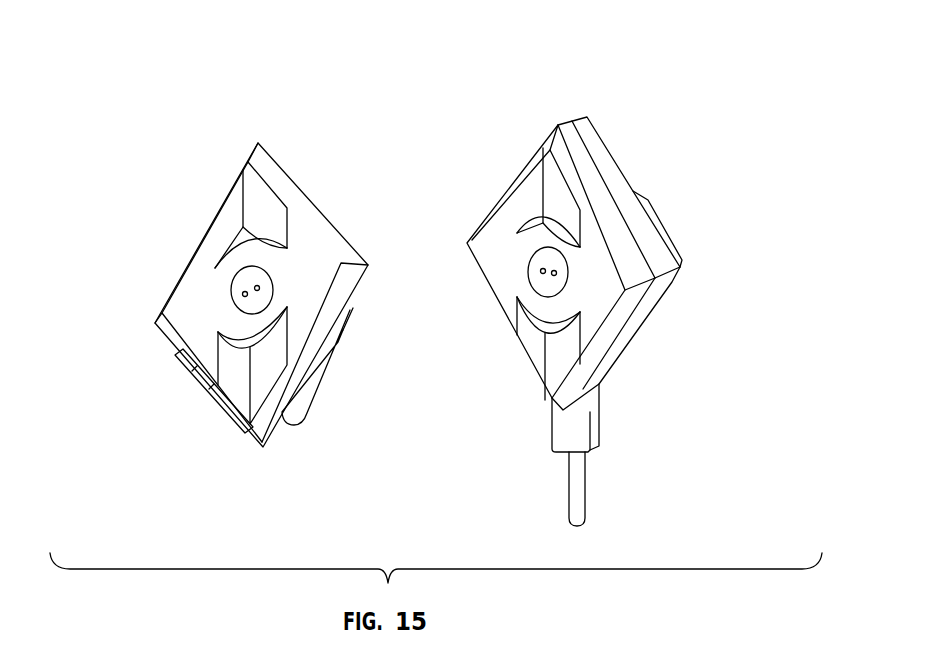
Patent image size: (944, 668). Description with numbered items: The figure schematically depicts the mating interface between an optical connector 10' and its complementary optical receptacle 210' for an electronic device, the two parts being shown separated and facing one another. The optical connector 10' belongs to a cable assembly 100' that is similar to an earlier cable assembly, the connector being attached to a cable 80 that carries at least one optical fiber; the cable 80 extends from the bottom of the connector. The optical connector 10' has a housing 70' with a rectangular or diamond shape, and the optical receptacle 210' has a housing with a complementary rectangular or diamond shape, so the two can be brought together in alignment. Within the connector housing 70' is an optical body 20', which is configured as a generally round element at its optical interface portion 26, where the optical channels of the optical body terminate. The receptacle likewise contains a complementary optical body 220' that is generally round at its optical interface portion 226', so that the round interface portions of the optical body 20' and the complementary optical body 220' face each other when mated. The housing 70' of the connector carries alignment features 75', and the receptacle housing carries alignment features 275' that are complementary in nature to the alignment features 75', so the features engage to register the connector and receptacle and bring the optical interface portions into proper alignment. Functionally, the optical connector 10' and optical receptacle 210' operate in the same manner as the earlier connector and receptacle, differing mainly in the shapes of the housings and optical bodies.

The optical receptacle 210' is at (242, 285).
The complementary optical body 220' is at (204, 295).
The optical interface portion 226' is at (338, 261).
The alignment features 275' is at (231, 283).
The cable assembly 100' is at (669, 268).
The optical connector 10' is at (620, 268).
The housing 70' is at (587, 210).
The alignment features 75' is at (645, 262).
The optical body 20' is at (649, 276).
The optical interface portion 26 is at (551, 283).
The cable 80 is at (583, 492).